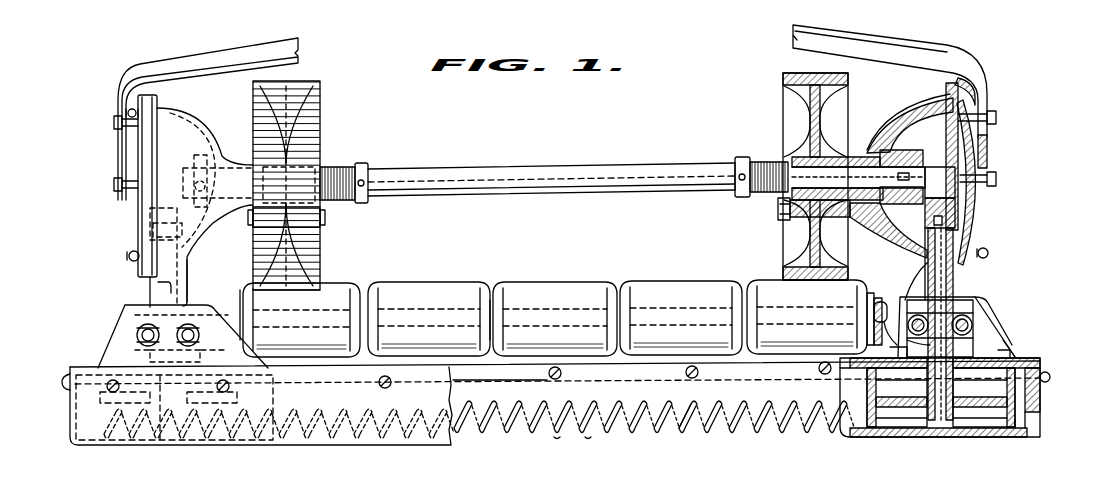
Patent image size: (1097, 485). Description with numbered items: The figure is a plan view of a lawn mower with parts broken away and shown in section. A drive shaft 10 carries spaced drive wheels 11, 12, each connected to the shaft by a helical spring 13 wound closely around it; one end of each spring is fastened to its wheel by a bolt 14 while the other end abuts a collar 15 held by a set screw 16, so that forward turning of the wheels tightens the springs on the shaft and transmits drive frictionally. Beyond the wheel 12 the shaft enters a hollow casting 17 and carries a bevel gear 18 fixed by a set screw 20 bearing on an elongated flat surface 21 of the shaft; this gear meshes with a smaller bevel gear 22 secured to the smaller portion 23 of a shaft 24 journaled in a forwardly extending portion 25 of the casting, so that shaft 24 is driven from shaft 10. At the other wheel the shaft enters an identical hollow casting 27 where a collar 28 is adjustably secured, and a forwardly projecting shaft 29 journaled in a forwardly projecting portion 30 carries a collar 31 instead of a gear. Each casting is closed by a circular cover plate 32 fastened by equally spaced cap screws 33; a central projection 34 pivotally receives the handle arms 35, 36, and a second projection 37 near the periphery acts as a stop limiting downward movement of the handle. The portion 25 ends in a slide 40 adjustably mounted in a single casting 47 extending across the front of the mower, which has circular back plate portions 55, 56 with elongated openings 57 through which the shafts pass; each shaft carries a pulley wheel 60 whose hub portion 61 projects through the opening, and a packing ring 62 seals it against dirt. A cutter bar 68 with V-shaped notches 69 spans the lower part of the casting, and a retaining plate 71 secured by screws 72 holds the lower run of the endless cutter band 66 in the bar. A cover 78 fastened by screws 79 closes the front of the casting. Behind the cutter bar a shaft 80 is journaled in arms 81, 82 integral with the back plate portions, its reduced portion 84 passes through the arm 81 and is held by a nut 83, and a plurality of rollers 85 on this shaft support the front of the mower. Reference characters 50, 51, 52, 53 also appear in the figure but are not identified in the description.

The drive shaft 10 is at (447, 175).
The drive wheel 11 is at (322, 110).
The drive wheel 12 is at (783, 100).
The helical spring 13 is at (340, 201).
The bolt 14 is at (780, 212).
The collar 15 is at (361, 163).
The set screw 16 is at (735, 190).
The hollow casting 17 is at (900, 122).
The bevel gear 18 is at (898, 150).
The set screw 20 is at (909, 176).
The elongated flat surface 21 is at (884, 205).
The smaller bevel gear 22 is at (972, 205).
The smaller portion 23 is at (970, 225).
The shaft 24 is at (953, 255).
The forwardly extending portion 25 is at (923, 262).
The hollow casting 27 is at (192, 116).
The collar 28 is at (210, 146).
The forwardly projecting shaft 29 is at (218, 238).
The forwardly projecting portion 30 is at (160, 288).
The collar 31 is at (200, 243).
The cover plate 32 is at (142, 225).
The cap screws 33 is at (128, 110).
The centrally located projection 34 is at (114, 185).
The handle arm 35 is at (905, 48).
The handle arm 36 is at (178, 62).
The second projection 37 is at (114, 123).
The slide 40 is at (978, 300).
The casting 47 is at (1040, 360).
The pedestal 50 is at (985, 300).
The bearing 51 is at (973, 325).
The bolt 52 is at (137, 335).
The bolt 53 is at (190, 324).
The back plate portion 55 is at (1013, 358).
The back plate portion 56 is at (64, 376).
The elongated opening 57 is at (1013, 346).
The pulley wheel 60 is at (905, 420).
The hub portion 61 is at (985, 420).
The packing ring 62 is at (950, 330).
The endless cutter band 66 is at (500, 432).
The cutter bar 68 is at (556, 438).
The V-shaped notches 69 is at (590, 438).
The retaining plate 71 is at (684, 400).
The screws 72 is at (705, 381).
The cover 78 is at (72, 428).
The screws 79 is at (380, 386).
The shaft 80 is at (492, 288).
The arm 81 is at (878, 300).
The arm 82 is at (242, 303).
The nut 83 is at (887, 308).
The reduced portion 84 is at (866, 300).
The rollers 85 is at (397, 298).